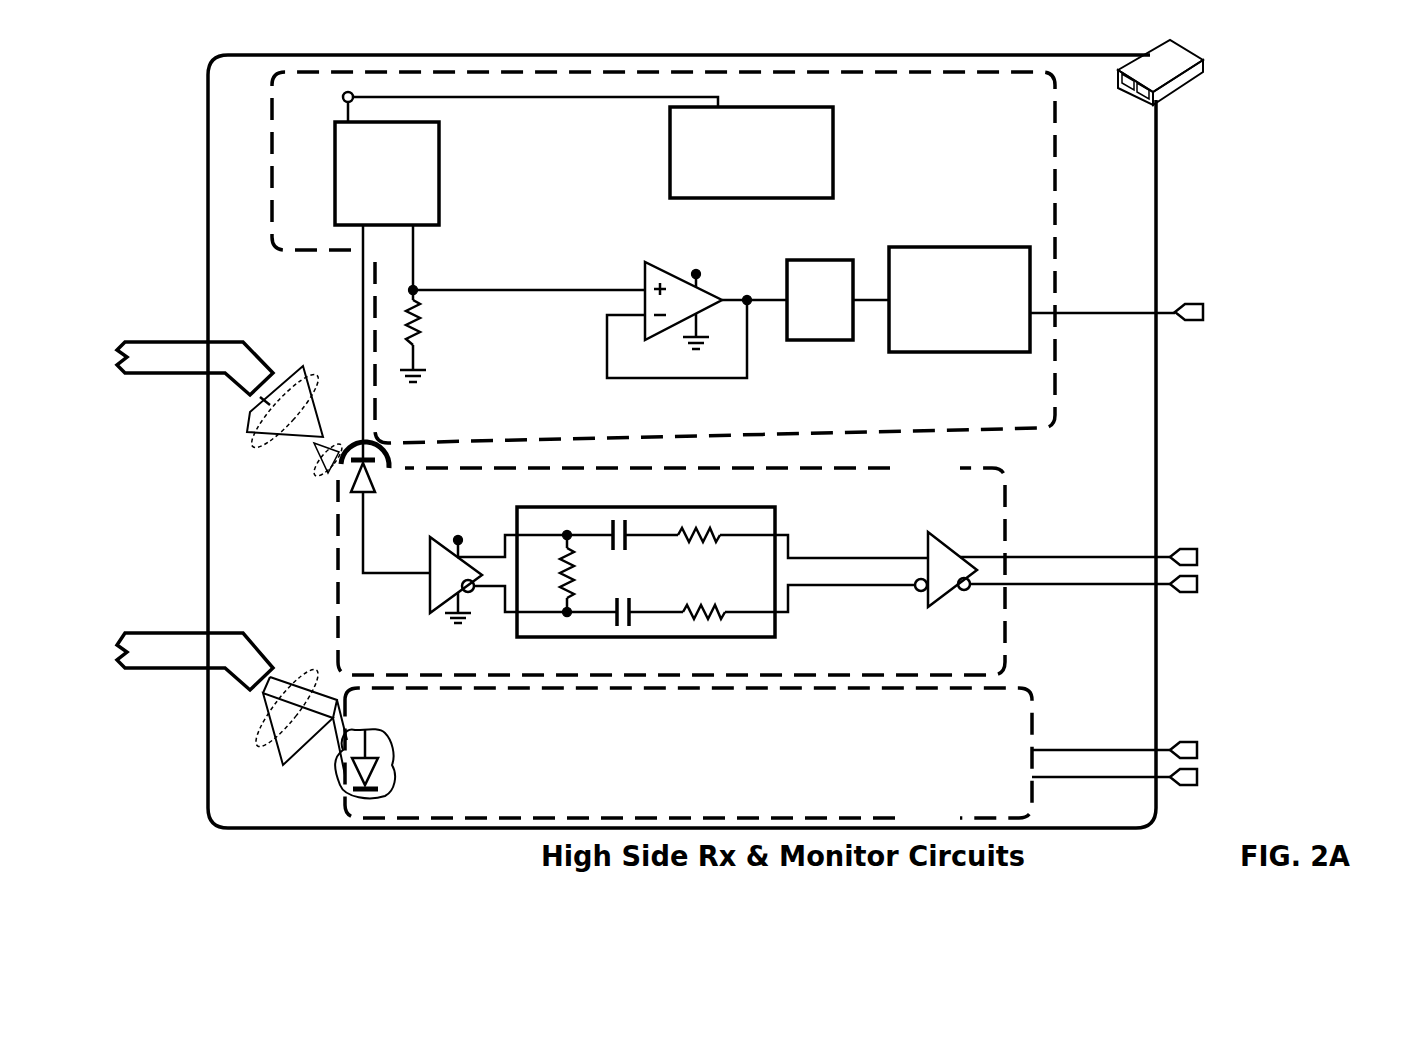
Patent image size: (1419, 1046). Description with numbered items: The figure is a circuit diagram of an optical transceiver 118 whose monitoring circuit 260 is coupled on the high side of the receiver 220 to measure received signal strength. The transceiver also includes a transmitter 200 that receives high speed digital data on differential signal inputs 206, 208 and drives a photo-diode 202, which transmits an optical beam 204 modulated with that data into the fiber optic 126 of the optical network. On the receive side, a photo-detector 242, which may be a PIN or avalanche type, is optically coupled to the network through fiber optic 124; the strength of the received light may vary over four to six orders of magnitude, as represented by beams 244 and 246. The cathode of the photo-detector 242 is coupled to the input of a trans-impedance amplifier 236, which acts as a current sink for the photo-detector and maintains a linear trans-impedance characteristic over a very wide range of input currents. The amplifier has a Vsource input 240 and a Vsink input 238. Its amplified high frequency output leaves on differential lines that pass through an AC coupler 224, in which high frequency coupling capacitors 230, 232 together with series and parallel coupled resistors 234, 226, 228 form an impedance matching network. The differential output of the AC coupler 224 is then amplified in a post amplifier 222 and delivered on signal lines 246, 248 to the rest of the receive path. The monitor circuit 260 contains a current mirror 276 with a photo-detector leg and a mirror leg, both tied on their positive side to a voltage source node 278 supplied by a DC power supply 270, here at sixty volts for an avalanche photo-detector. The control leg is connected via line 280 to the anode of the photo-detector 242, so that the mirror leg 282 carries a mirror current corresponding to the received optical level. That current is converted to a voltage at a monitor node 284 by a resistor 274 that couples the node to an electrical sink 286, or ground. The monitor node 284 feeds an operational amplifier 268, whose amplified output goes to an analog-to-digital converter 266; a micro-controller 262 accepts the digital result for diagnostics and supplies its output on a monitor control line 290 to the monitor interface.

The optical transceiver 118 is at (1157, 132).
The fiber optic 124 is at (183, 343).
The fiber optic 126 is at (175, 633).
The transmitter 200 is at (1028, 695).
The photo-diode 202 is at (392, 760).
The optical beam 204 is at (262, 750).
The differential signal input 206 is at (1178, 742).
The differential signal input 208 is at (1178, 786).
The receiver 220 is at (1005, 481).
The post amplifier 222 is at (935, 531).
The AC coupler 224 is at (770, 507).
The resistor 226 is at (705, 541).
The resistor 228 is at (710, 600).
The high frequency coupling capacitor 230 is at (622, 598).
The high frequency coupling capacitor 232 is at (573, 560).
The resistor 234 is at (560, 574).
The trans-impedance amplifier 236 is at (430, 598).
The Vsink input 238 is at (467, 622).
The Vsource input 240 is at (460, 534).
The photo-detector 242 is at (375, 490).
The beam 244 is at (318, 472).
The beam / signal line 246 is at (250, 447).
The signal line 248 is at (1178, 593).
The monitor circuit 260 is at (1057, 97).
The micro-controller 262 is at (993, 247).
The analog-to-digital converter 266 is at (800, 260).
The operational amplifier 268 is at (668, 265).
The DC power supply 270 is at (670, 178).
The resistor 274 is at (425, 322).
The current mirror 276 is at (439, 205).
The voltage source node 278 is at (343, 97).
The line 280 is at (362, 283).
The mirror leg 282 is at (415, 255).
The monitor node 284 is at (420, 293).
The electrical sink 286 is at (425, 368).
The monitor control line 290 is at (1180, 303).